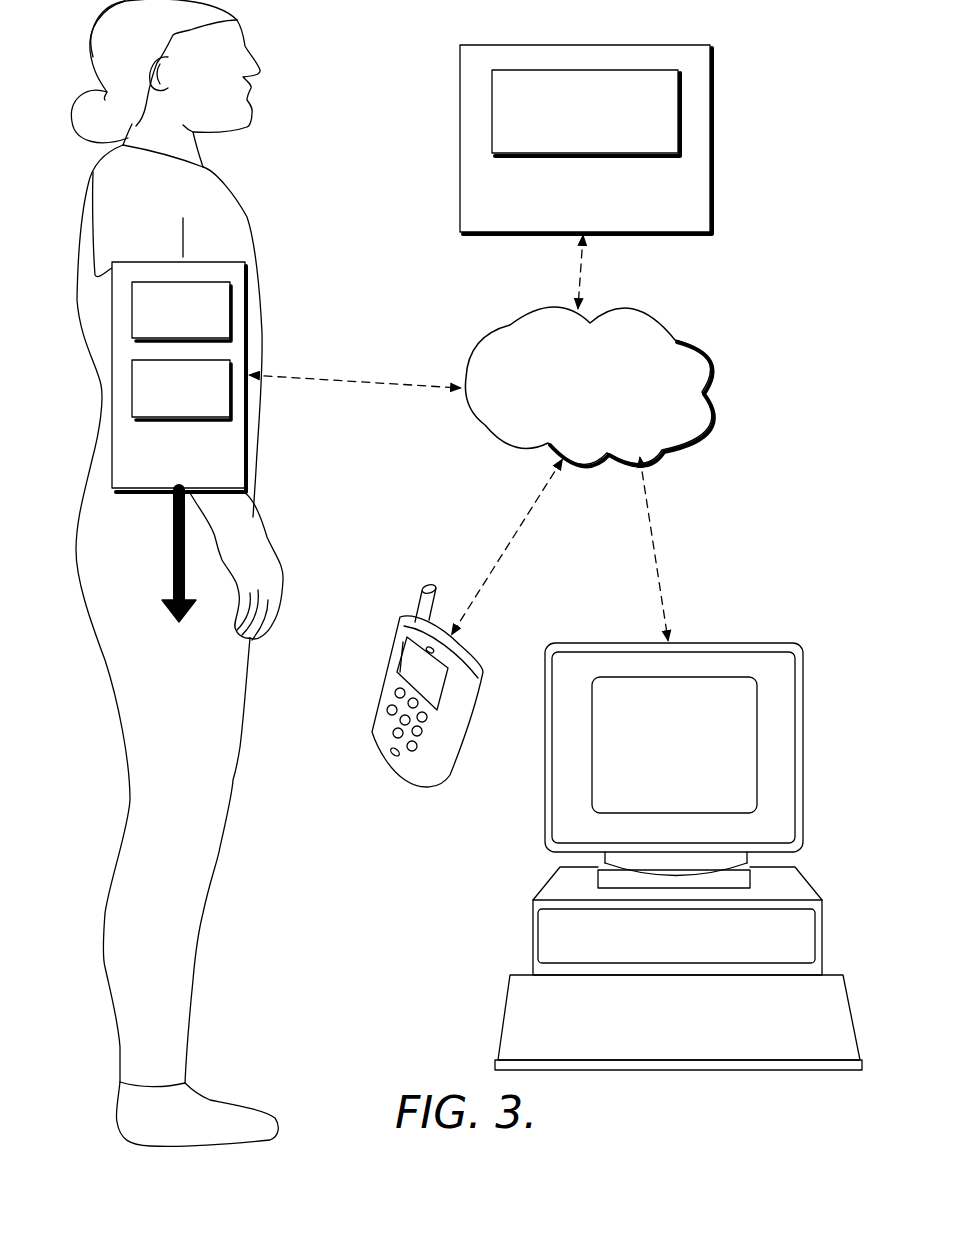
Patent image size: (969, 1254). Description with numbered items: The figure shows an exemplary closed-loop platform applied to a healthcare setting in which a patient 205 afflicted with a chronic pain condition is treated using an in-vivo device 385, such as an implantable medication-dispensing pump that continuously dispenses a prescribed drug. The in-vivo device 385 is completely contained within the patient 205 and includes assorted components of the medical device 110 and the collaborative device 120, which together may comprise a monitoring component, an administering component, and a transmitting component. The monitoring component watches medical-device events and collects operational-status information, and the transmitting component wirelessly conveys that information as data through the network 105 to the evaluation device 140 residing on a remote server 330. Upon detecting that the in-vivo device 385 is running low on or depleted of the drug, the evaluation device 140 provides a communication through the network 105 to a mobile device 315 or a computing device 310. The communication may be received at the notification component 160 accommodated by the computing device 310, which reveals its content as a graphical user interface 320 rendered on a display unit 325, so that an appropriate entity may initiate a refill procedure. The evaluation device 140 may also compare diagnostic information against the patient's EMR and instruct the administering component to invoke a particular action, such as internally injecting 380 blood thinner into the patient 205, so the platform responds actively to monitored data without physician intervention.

The patient 205 is at (203, 917).
The in-vivo device 385 is at (145, 377).
The medical device 110 is at (181, 311).
The collaborative device 120 is at (181, 390).
The injecting 380 is at (173, 538).
The remote server 330 is at (586, 139).
The evaluation device 140 is at (586, 113).
The network 105 is at (680, 337).
The mobile device 315 is at (380, 668).
The display unit 325 is at (649, 765).
The graphical user interface (GUI) 320 is at (674, 745).
The notification component 160 is at (545, 935).
The computing device 310 is at (515, 1015).